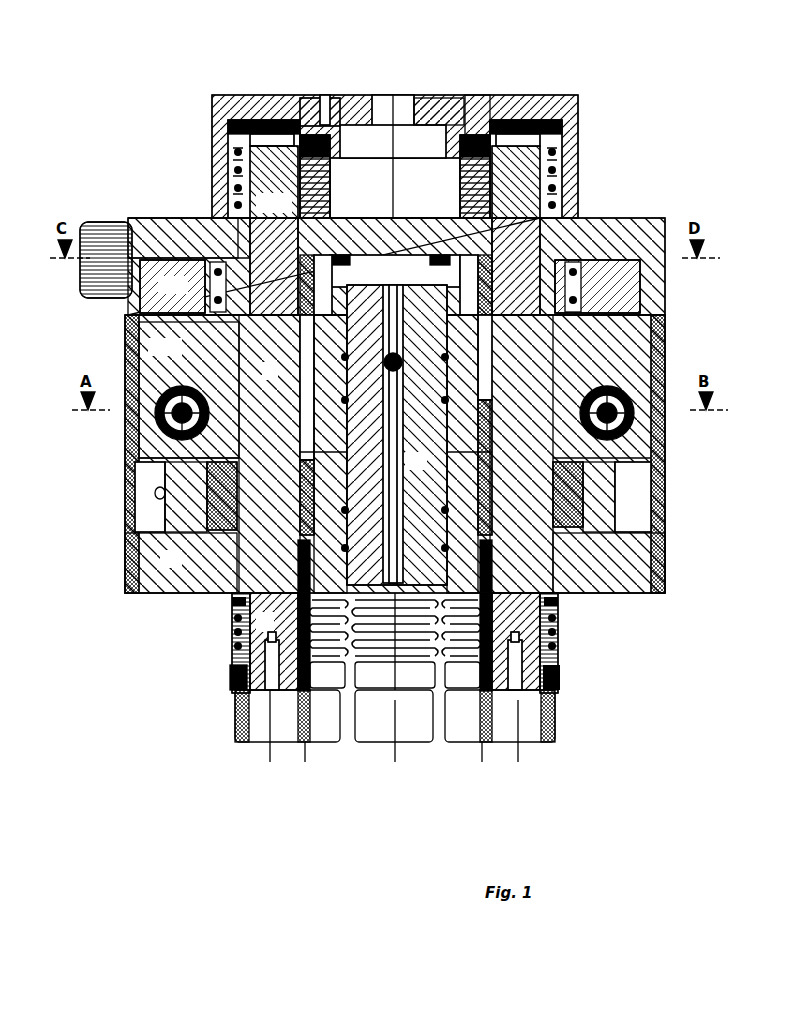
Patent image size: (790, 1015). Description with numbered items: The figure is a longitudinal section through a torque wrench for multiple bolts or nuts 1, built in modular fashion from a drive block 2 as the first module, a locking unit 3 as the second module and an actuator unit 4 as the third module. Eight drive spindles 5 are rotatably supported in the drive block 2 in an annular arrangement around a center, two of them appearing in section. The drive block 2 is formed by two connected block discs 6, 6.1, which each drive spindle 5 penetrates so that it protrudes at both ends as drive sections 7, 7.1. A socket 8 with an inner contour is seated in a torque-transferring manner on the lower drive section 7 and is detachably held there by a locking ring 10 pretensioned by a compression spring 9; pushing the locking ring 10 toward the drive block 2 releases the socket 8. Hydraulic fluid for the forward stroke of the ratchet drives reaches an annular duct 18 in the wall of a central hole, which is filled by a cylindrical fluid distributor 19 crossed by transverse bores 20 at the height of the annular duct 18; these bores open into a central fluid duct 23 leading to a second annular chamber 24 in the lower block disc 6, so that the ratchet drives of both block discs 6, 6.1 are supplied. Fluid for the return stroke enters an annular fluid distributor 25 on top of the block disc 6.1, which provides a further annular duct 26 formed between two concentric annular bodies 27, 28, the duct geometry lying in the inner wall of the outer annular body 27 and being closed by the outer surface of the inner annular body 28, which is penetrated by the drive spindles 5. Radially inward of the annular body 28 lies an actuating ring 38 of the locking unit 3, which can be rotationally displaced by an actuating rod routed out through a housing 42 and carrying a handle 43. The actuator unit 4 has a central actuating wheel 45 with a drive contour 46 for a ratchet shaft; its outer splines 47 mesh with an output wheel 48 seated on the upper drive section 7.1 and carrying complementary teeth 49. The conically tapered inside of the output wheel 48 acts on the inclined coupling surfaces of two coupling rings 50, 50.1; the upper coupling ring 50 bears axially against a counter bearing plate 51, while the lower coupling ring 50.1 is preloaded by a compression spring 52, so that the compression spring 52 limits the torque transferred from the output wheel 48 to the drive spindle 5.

The torque wrench for multiple bolts or nuts 1 is at (600, 135).
The drive block 2 is at (680, 317).
The locking unit 3 is at (680, 220).
The actuator unit 4 is at (680, 96).
The drive spindle 5 is at (277, 380).
The block disc 6 is at (175, 568).
The block disc 6.1 is at (176, 356).
The drive section 7 is at (270, 631).
The drive section 7.1 is at (282, 212).
The socket 8 is at (235, 718).
The compression spring 9 is at (233, 626).
The locking ring 10 is at (228, 680).
The annular duct 18 is at (135, 318).
The fluid distributor 19 is at (425, 470).
The transverse bores 20 is at (392, 405).
The central fluid duct 23 is at (390, 267).
The second annular chamber 24 is at (548, 582).
The annular fluid distributor 25 is at (158, 248).
The annular duct 26 is at (182, 252).
The annular body 27 is at (184, 295).
The annular body 28 is at (216, 266).
The actuating ring 38 is at (396, 255).
The housing 42 is at (122, 494).
The handle 43 is at (93, 220).
The actuating wheel 45 is at (433, 100).
The drive contour 46 is at (386, 102).
The outer splines 47 is at (462, 100).
The output wheel 48 is at (312, 108).
The teeth 49 is at (230, 134).
The coupling ring 50 is at (238, 135).
The coupling ring 50.1 is at (240, 160).
The counter bearing plate 51 is at (328, 110).
The compression spring 52 is at (338, 186).